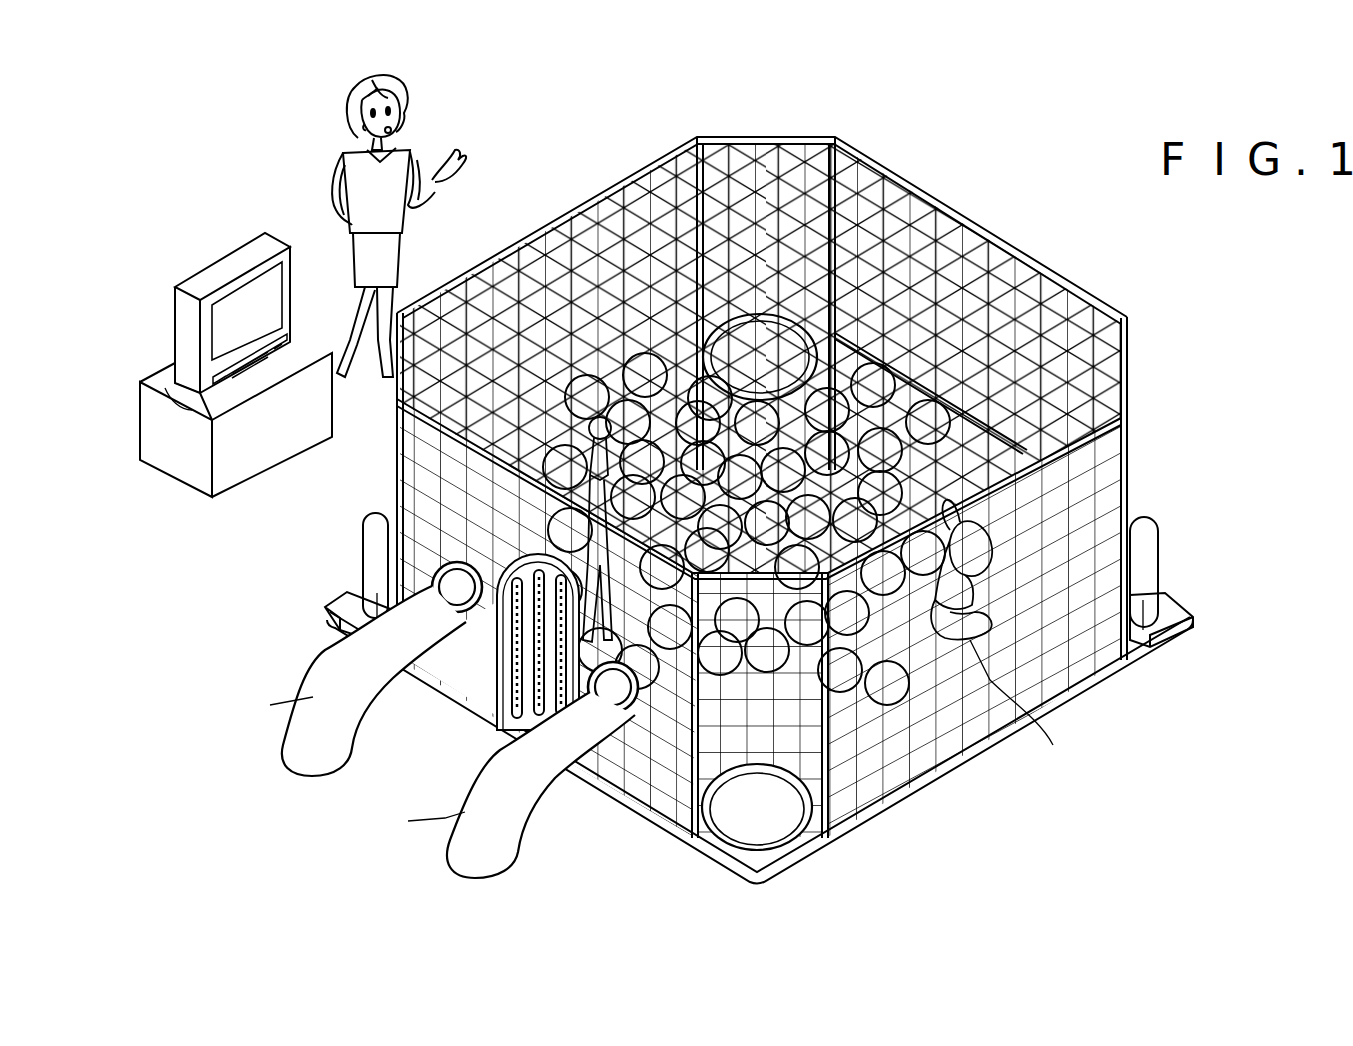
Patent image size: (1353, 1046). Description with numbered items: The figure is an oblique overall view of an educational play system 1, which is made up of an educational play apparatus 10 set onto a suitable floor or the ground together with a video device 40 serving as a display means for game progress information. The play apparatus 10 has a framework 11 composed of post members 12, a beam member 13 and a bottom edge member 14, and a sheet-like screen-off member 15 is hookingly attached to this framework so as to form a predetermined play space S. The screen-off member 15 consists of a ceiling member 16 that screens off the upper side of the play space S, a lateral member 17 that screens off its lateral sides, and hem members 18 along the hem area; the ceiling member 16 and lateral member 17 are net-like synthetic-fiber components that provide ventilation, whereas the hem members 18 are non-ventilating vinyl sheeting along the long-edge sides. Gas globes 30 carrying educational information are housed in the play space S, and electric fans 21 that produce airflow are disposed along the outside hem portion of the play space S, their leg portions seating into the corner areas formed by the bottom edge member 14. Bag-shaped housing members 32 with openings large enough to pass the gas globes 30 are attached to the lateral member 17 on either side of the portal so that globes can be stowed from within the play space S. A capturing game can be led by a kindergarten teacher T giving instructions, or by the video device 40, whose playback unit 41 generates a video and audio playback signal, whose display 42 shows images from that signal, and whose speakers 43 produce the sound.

The educational play system 1 is at (190, 612).
The educational play apparatus 10 is at (1077, 258).
The framework 11 is at (1133, 650).
The post members 12 is at (862, 158).
The beam member 13 is at (1130, 347).
The bottom edge member 14 is at (1087, 688).
The screen-off member 15 is at (923, 217).
The ceiling member 16 is at (760, 357).
The lateral member 17 is at (1120, 448).
The hem members 18 is at (860, 803).
The electric fans 21 is at (1163, 553).
The gas globes 30 is at (910, 707).
The housing members 32 is at (431, 720).
The video device 40 is at (178, 266).
The playback unit 41 is at (250, 363).
The display 42 is at (280, 280).
The speakers 43 is at (190, 412).
The play space S is at (967, 313).
The kindergarten teacher T is at (430, 131).